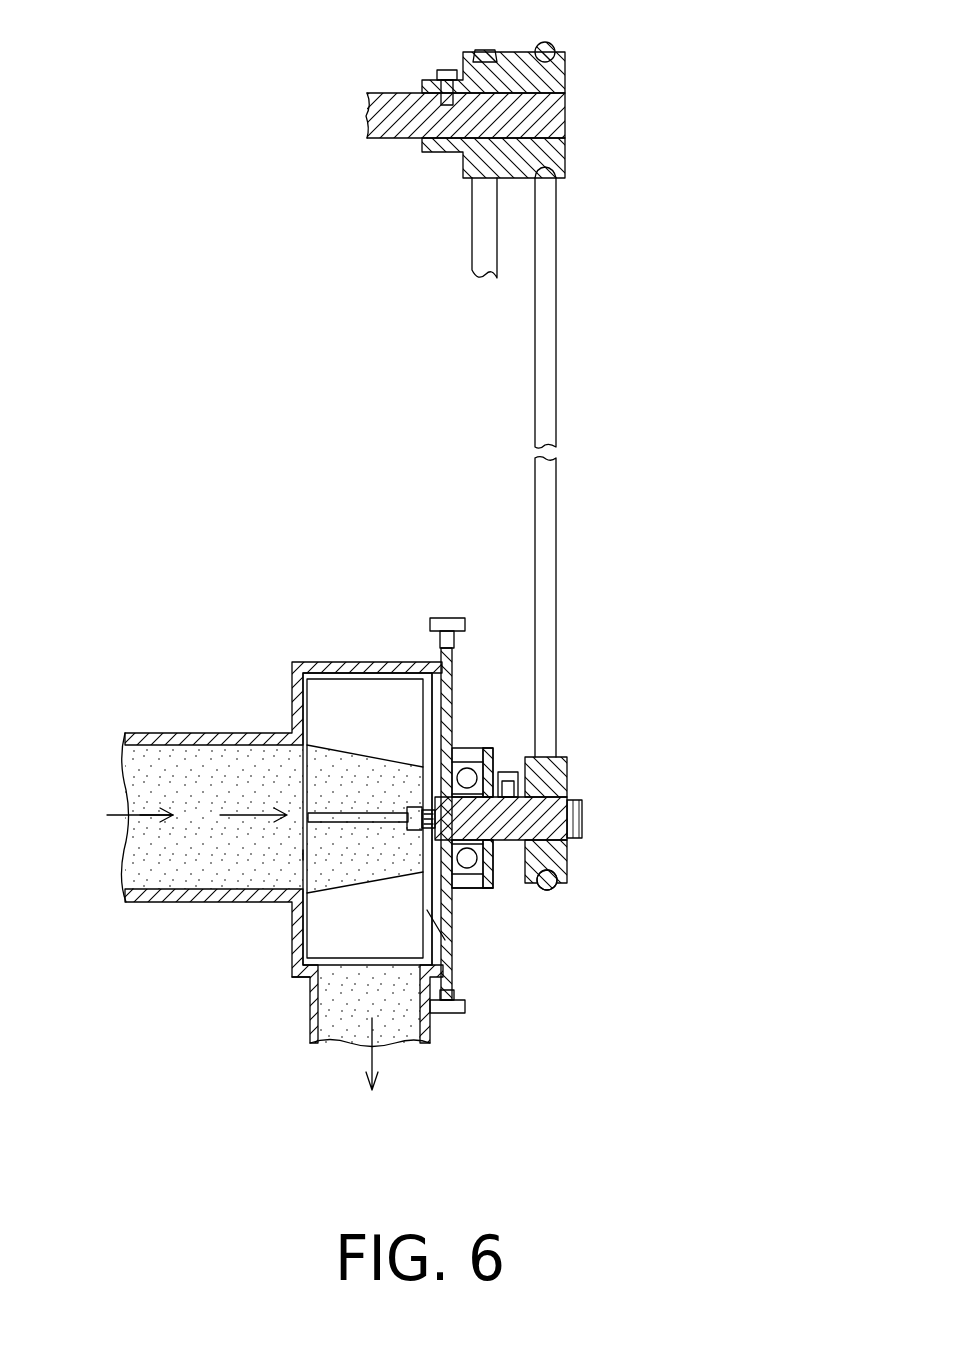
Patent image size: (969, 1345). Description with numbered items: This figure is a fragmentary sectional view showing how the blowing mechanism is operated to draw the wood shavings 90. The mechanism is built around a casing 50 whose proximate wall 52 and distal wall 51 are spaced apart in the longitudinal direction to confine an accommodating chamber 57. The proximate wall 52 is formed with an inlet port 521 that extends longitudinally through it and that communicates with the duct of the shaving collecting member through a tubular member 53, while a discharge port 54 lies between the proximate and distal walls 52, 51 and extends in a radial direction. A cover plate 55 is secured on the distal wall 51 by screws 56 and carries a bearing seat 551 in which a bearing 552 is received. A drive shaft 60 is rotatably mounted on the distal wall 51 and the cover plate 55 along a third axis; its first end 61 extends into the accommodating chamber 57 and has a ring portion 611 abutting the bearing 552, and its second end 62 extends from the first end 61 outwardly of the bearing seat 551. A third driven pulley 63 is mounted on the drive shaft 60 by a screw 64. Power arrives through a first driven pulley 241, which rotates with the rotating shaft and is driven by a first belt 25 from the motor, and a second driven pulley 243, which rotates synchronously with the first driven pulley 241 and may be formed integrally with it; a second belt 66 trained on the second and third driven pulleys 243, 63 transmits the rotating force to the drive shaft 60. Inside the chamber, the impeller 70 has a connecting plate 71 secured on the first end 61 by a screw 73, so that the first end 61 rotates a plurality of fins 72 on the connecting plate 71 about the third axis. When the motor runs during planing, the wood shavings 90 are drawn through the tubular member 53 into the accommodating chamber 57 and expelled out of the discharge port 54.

The first driven pulley 241 is at (550, 89).
The second driven pulley 243 is at (558, 78).
The first belt 25 is at (470, 225).
The second belt 66 is at (550, 485).
The casing 50 is at (290, 655).
The distal wall 51 is at (434, 655).
The proximate wall 52 is at (290, 955).
The inlet port 521 is at (300, 855).
The tubular member 53 is at (155, 737).
The discharge port 54 is at (310, 1022).
The cover plate 55 is at (470, 748).
The screws 56 is at (448, 618).
The accommodating chamber 57 is at (277, 758).
The drive shaft 60 is at (598, 822).
The first end 61 is at (497, 888).
The ring portion 611 is at (455, 890).
The second end 62 is at (580, 807).
The third driven pulley 63 is at (563, 863).
The screw 64 is at (535, 750).
The bearing seat 551 is at (486, 748).
The bearing 552 is at (498, 748).
The impeller 70 is at (460, 955).
The connecting plate 71 is at (460, 947).
The fins 72 is at (333, 920).
The screw 73 is at (412, 807).
The wood shavings 90 is at (160, 897).